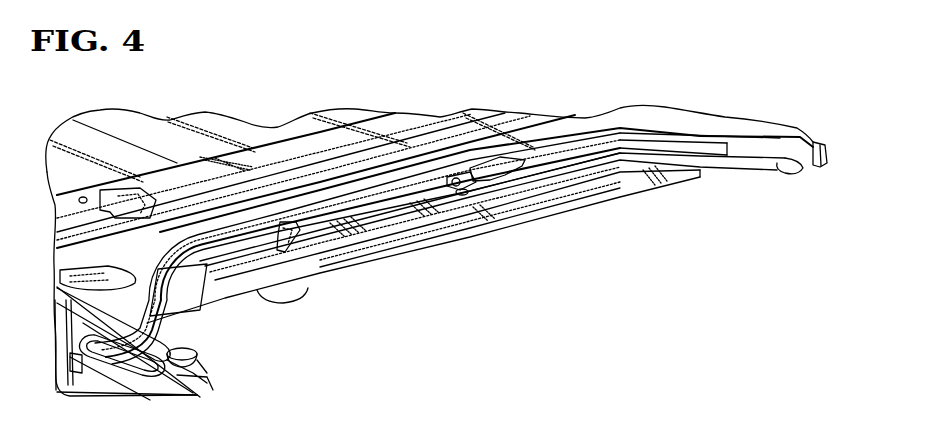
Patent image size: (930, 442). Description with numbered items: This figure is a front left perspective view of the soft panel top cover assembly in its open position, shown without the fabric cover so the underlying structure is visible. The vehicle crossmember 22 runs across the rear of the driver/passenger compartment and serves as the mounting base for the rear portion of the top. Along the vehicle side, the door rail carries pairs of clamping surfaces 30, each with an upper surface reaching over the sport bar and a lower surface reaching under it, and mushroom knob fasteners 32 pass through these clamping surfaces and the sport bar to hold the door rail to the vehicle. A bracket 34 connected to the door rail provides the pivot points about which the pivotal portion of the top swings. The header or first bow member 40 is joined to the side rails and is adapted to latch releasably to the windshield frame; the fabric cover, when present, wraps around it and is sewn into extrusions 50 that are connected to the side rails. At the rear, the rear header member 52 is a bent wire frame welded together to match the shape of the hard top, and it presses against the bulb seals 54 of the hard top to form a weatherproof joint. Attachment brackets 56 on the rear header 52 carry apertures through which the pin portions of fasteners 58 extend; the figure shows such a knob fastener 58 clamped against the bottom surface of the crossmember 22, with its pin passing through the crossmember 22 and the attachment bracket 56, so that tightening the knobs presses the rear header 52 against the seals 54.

The crossmember 22 is at (511, 210).
The clamping surfaces 30 is at (200, 373).
The mushroom knob fasteners 32 is at (200, 356).
The bracket 34 is at (157, 378).
The first bow member 40 is at (404, 128).
The extrusions 50 is at (73, 393).
The rear header member 52 is at (253, 256).
The seals 54 is at (145, 272).
The attachment brackets 56 is at (455, 178).
The fasteners 58 is at (303, 287).